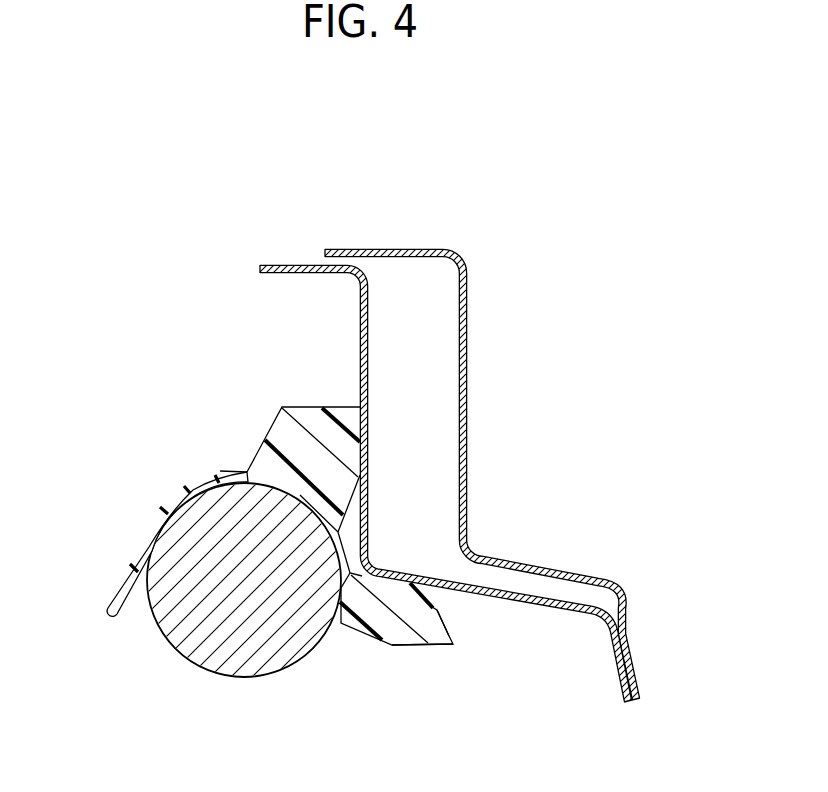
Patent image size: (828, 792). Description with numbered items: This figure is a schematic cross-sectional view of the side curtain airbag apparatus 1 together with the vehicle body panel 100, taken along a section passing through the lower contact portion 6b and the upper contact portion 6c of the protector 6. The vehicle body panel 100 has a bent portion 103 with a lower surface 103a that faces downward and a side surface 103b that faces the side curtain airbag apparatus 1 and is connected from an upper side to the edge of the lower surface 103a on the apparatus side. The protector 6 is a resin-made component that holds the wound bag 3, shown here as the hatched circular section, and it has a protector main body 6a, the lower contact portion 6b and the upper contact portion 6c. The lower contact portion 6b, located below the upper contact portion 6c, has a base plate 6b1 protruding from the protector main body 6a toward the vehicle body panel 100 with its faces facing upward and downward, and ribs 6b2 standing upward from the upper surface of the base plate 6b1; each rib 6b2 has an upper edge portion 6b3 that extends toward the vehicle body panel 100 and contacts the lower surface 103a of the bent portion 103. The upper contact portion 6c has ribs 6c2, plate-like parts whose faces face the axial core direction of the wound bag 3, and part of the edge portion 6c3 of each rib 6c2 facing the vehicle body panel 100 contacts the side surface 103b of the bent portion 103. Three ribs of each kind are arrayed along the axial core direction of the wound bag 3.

The side curtain airbag apparatus 1 is at (233, 432).
The wound bag 3 is at (229, 674).
The protector 6 is at (311, 543).
The protector main body 6a is at (158, 521).
The lower contact portion 6b is at (448, 638).
The base plate 6b1 is at (451, 643).
The rib 6b2 is at (440, 609).
The upper edge portion 6b3 is at (415, 580).
The upper contact portion 6c is at (377, 450).
The rib 6c2 is at (321, 406).
The edge portion 6c3 is at (360, 435).
The vehicle body panel 100 is at (303, 262).
The bent portion 103 is at (388, 557).
The lower surface 103a is at (550, 608).
The side surface 103b is at (358, 507).